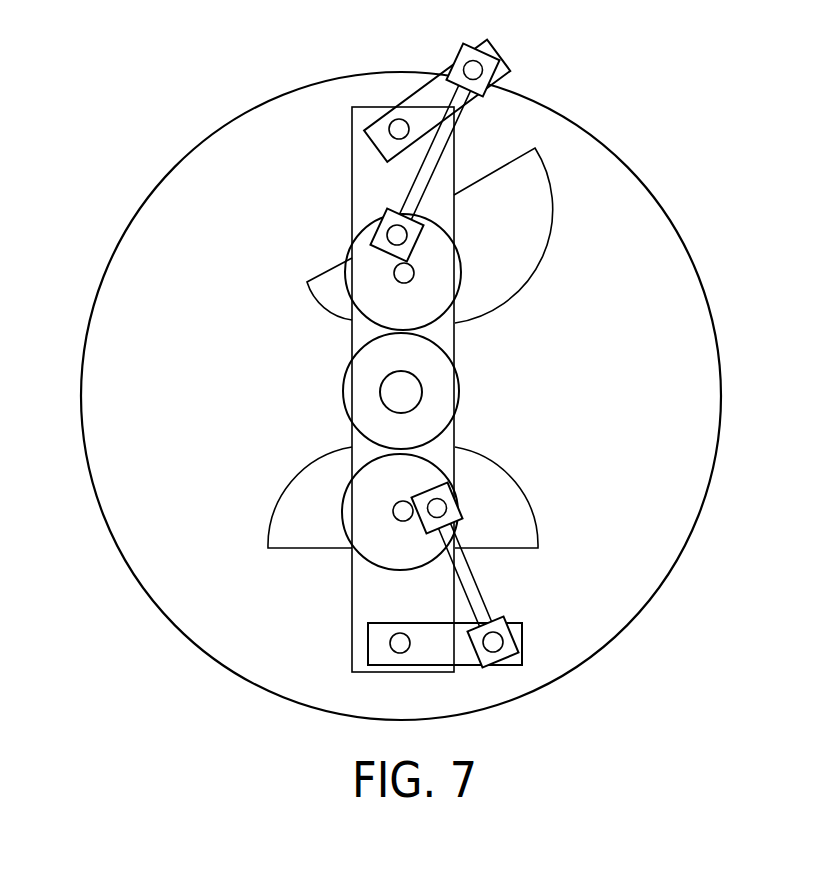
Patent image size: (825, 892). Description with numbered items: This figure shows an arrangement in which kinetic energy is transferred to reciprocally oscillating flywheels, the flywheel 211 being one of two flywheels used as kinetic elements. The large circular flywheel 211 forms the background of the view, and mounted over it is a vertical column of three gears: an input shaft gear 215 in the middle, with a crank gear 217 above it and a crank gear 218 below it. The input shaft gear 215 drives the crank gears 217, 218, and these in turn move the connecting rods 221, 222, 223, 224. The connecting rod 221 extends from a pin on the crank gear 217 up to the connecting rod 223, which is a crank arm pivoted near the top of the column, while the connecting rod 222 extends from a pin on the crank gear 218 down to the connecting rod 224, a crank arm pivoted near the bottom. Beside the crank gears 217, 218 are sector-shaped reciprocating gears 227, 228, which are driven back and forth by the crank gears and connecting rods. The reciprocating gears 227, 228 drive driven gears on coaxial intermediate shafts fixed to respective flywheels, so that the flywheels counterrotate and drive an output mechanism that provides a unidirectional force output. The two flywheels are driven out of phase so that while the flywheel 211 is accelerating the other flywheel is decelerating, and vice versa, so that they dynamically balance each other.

The flywheel 211 is at (632, 385).
The input shaft gear 215 is at (450, 387).
The crank gear 217 is at (358, 258).
The crank gear 218 is at (360, 495).
The connecting rod 221 is at (455, 133).
The connecting rod 222 is at (478, 588).
The connecting rod 223 is at (418, 90).
The connecting rod 224 is at (433, 647).
The reciprocating gear 227 is at (532, 228).
The reciprocating gear 228 is at (510, 508).